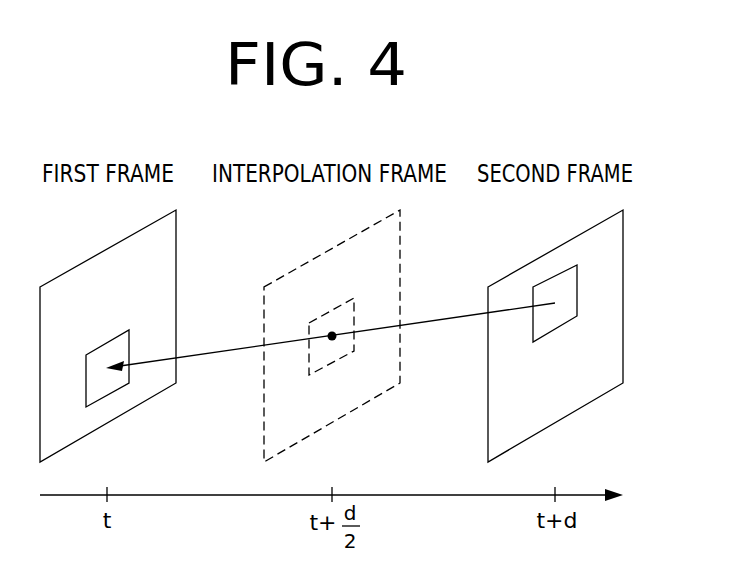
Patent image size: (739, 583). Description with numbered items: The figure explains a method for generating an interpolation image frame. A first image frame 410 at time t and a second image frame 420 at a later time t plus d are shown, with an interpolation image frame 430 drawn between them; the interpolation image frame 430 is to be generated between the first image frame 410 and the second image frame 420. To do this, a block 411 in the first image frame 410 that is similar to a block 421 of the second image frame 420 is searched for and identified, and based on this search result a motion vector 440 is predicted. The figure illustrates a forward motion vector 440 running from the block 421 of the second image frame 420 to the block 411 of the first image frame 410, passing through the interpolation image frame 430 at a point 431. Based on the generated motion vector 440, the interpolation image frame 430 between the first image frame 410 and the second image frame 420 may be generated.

The first image frame 410 is at (107, 249).
The block 411 is at (107, 344).
The second image frame 420 is at (556, 249).
The block 421 is at (558, 328).
The interpolation image frame 430 is at (331, 249).
The interpolated object 431 is at (331, 311).
The motion vector 440 is at (452, 318).